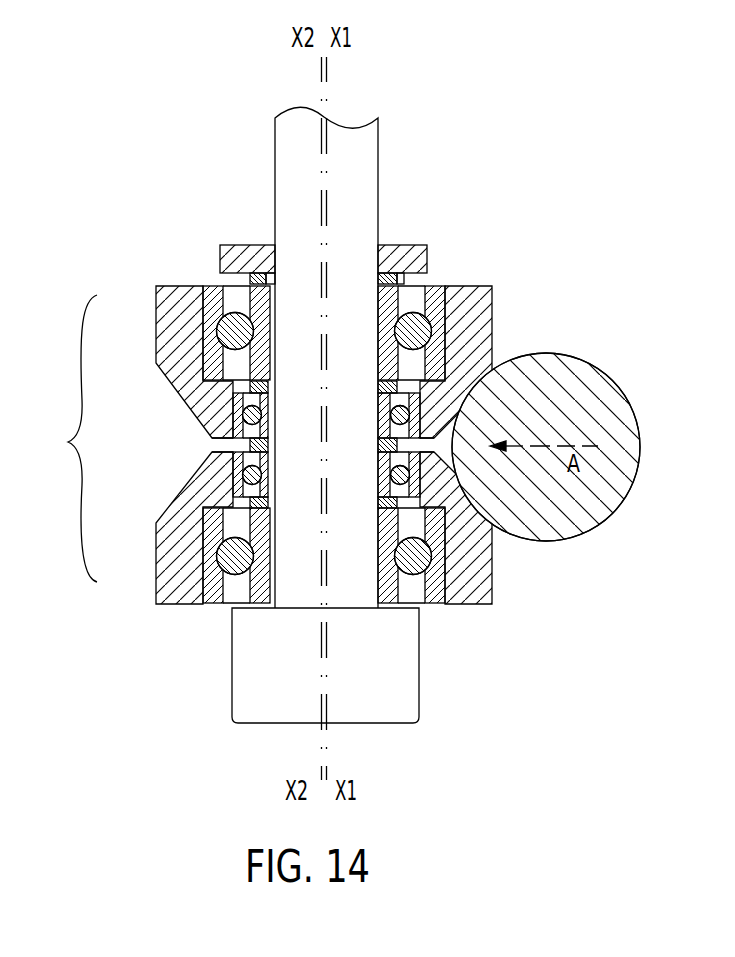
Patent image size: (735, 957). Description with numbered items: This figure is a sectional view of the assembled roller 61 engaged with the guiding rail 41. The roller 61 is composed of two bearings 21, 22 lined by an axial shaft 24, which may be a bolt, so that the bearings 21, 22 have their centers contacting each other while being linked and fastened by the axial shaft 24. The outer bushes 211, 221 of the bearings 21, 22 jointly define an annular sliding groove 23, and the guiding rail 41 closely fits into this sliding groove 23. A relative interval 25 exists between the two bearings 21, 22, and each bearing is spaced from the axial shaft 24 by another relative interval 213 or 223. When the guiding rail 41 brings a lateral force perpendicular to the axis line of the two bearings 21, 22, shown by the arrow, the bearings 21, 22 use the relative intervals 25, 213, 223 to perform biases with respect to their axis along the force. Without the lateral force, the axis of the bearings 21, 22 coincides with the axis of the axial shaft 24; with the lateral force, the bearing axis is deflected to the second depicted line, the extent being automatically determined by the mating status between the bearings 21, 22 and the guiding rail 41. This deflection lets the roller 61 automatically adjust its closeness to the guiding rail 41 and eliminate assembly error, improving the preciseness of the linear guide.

The bearing 21 is at (372, 303).
The outer bush 211 is at (493, 295).
The relative interval 213 is at (262, 245).
The bearing 22 is at (358, 571).
The outer bush 221 is at (489, 578).
The relative interval 223 is at (271, 608).
The annular sliding groove 23 is at (173, 447).
The axial shaft 24 is at (243, 694).
The relative interval 25 is at (434, 447).
The guiding rail 41 is at (633, 446).
The roller 61 is at (68, 438).